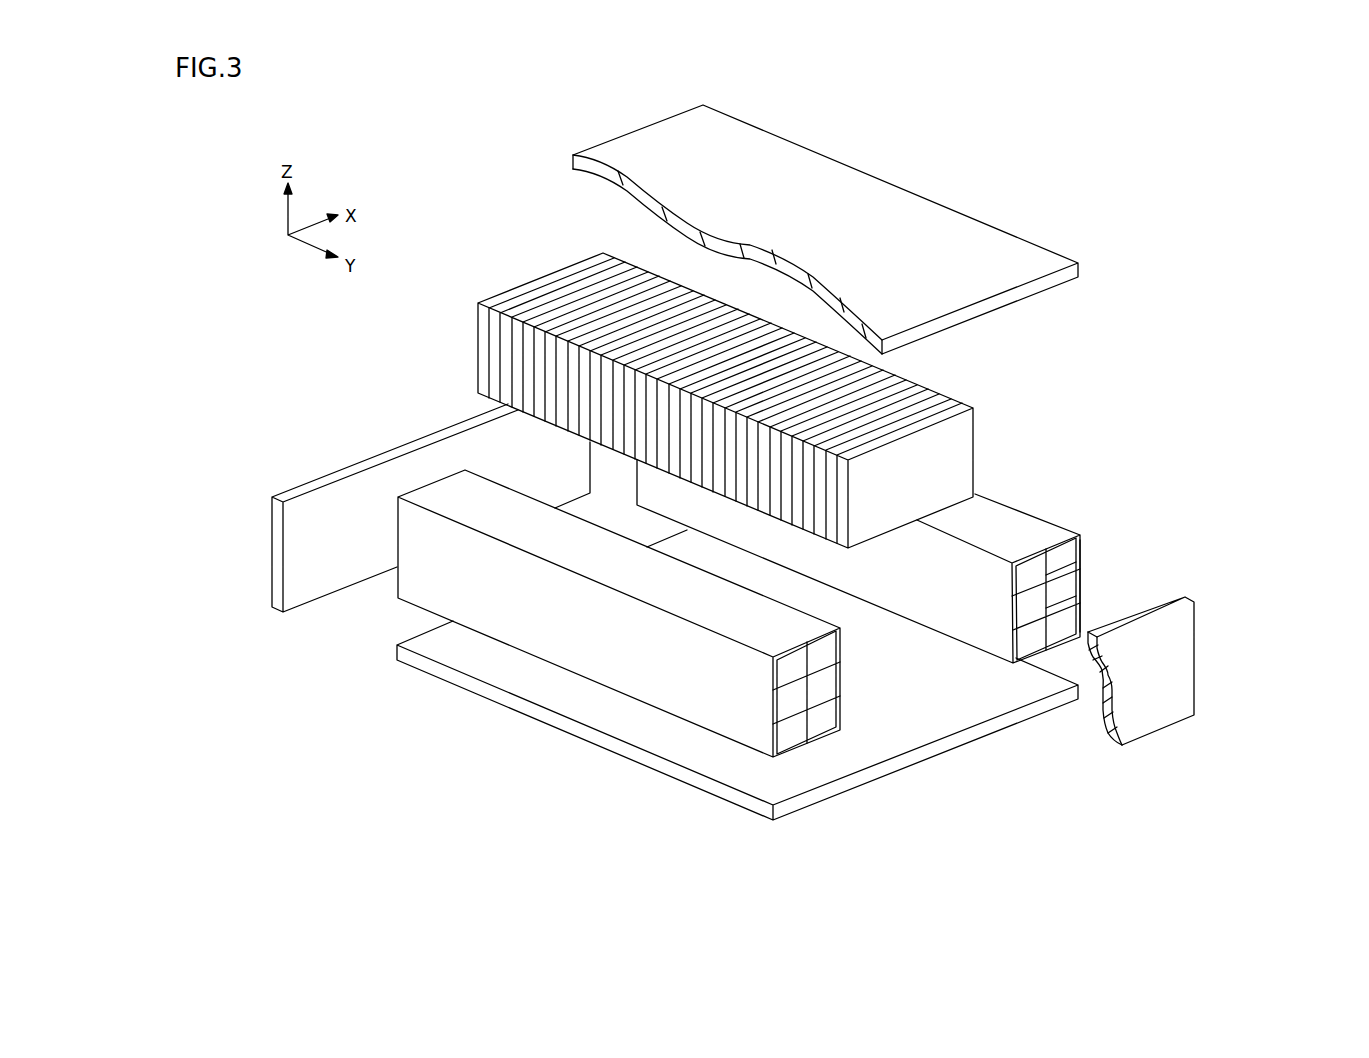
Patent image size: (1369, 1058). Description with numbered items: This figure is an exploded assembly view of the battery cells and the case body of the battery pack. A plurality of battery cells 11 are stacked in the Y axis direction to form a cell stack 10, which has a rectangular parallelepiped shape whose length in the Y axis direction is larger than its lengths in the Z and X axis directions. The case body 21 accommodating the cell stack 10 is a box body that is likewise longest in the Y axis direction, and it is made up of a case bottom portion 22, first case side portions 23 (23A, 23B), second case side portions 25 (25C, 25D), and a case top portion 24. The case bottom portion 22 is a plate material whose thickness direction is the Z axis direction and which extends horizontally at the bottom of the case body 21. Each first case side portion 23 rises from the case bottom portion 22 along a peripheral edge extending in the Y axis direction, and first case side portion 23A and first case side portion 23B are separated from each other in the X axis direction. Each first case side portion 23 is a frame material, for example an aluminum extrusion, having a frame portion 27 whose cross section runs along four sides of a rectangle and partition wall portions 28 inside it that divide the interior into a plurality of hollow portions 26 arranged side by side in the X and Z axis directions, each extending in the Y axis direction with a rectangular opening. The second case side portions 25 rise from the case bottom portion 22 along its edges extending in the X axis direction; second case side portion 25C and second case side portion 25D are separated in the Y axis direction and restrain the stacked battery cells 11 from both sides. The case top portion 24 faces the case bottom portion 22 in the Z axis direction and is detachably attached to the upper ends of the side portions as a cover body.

The cell stack 10 is at (742, 388).
The battery cell 11 is at (521, 288).
The case body 21 is at (1116, 480).
The case bottom portion 22 is at (927, 728).
The first case side portion 23 is at (739, 612).
The first case side portion 23A is at (568, 636).
The first case side portion 23B is at (1032, 530).
The case top portion 24 is at (815, 182).
The second case side portion 25 is at (781, 574).
The second case side portion 25C is at (1168, 678).
The second case side portion 25D is at (310, 563).
The hollow portion 26 is at (783, 717).
The frame portion 27 is at (1082, 558).
The partition wall portion 28 is at (1060, 598).